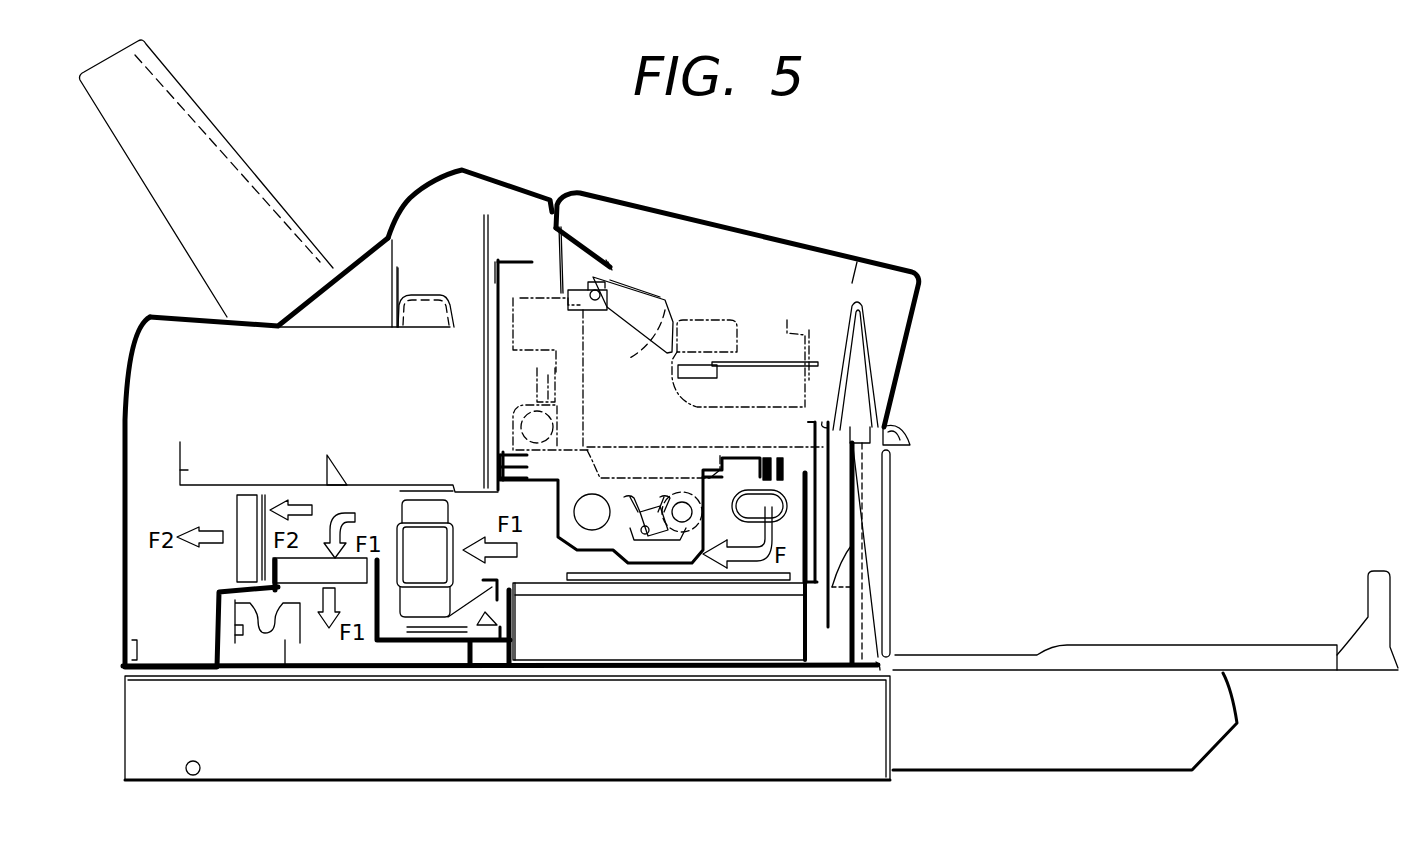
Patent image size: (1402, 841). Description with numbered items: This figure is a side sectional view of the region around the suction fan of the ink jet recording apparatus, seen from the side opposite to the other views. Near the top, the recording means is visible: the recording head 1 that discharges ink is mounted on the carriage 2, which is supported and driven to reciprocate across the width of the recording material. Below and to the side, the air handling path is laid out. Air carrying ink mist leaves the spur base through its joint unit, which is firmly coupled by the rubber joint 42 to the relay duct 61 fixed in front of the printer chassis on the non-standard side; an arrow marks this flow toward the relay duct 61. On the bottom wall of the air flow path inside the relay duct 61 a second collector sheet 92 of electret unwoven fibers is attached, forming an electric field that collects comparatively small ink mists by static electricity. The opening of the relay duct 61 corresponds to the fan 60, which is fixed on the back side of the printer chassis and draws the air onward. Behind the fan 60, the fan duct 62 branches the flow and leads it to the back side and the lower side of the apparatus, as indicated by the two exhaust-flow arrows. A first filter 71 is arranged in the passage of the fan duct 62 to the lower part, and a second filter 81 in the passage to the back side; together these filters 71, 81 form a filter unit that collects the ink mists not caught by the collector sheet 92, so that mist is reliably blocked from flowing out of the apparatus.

The recording head 1 is at (755, 380).
The carriage 2 is at (633, 360).
The rubber joint 42 is at (800, 503).
The fan 60 is at (425, 603).
The relay duct 61 is at (602, 563).
The fan duct 62 is at (260, 548).
The first filter 71 is at (300, 578).
The second filter 81 is at (237, 508).
The second collector sheet 92 is at (745, 580).